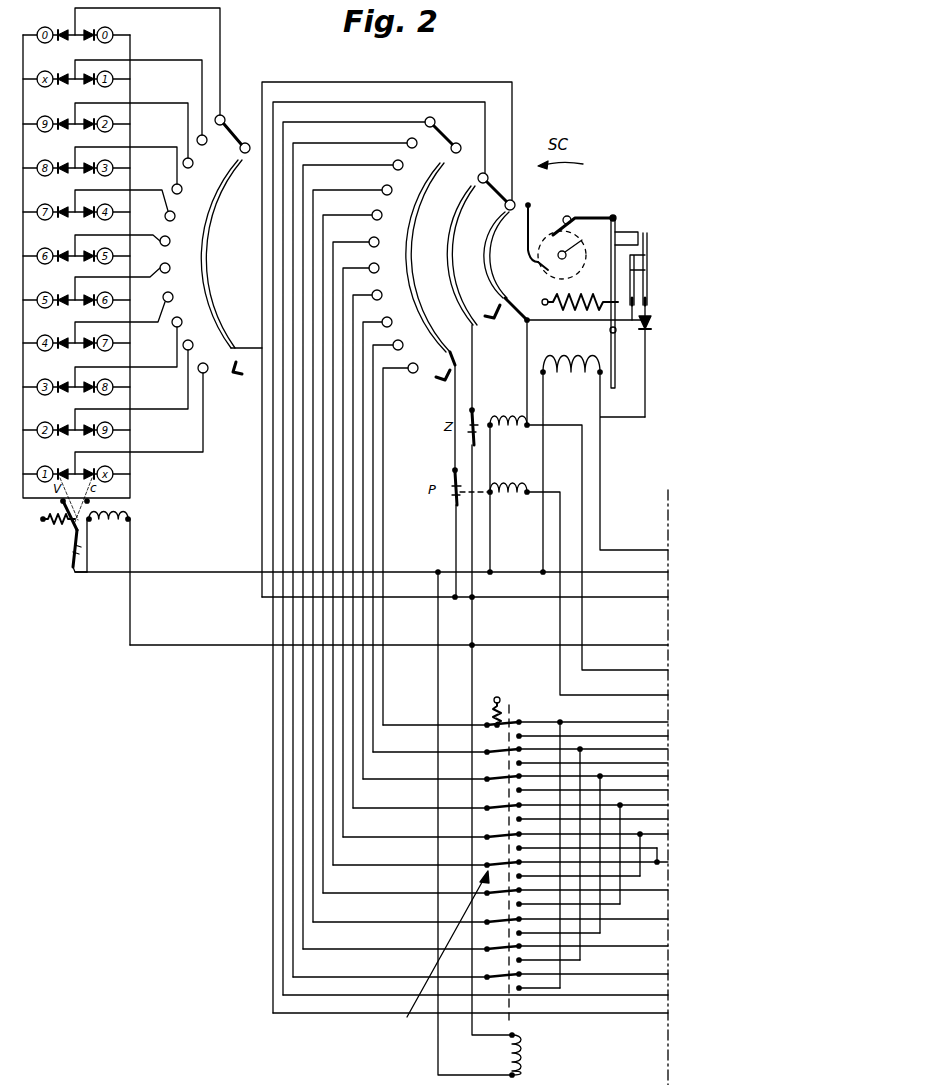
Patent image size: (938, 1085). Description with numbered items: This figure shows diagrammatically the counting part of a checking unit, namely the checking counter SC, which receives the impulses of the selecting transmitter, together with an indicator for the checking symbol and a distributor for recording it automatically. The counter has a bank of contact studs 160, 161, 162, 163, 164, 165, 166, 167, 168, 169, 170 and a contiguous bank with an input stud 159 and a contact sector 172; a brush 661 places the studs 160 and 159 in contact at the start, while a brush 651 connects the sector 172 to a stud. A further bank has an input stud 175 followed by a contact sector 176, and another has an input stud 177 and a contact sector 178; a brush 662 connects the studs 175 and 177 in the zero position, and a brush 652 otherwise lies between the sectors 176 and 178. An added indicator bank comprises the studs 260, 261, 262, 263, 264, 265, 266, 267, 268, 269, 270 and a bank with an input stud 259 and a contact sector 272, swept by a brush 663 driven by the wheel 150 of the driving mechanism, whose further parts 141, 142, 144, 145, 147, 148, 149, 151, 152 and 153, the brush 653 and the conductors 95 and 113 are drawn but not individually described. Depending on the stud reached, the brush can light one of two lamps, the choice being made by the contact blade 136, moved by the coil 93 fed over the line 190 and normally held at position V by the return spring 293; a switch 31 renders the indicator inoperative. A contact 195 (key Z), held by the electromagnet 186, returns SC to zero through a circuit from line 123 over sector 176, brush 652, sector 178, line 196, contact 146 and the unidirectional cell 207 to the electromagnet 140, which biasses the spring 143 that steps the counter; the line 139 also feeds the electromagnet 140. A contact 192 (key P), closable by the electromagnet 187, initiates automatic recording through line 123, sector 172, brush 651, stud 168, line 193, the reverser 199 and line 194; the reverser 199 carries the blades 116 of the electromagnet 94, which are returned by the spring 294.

The contact stud 260 is at (165, 66).
The contact stud 261 is at (154, 110).
The contact stud 262 is at (148, 140).
The contact stud 263 is at (143, 173).
The contact stud 264 is at (139, 208).
The contact stud 265 is at (137, 245).
The contact stud 266 is at (137, 281).
The contact stud 267 is at (138, 316).
The contact stud 268 is at (143, 351).
The input stud 269 is at (149, 385).
The contact stud 270 is at (156, 418).
The terminal 259 is at (251, 160).
The brush 663 is at (241, 134).
The contact sector 272 is at (211, 265).
The wiper contact 653 is at (229, 381).
The contact blade 136 is at (67, 513).
The return spring 293 is at (54, 530).
The switch 31 is at (70, 552).
The relay coil 93 is at (108, 579).
The conductor 95 is at (371, 562).
The feeding line 190 is at (399, 635).
The line 123 is at (398, 600).
The cable conductors 113 is at (271, 828).
The line 193 is at (383, 790).
The contact stud 160 is at (445, 116).
The contact stud 161 is at (425, 149).
The contact stud 162 is at (412, 170).
The contact stud 163 is at (402, 194).
The contact stud 164 is at (392, 220).
The contact stud 165 is at (389, 245).
The contact stud 166 is at (389, 270).
The contact stud 167 is at (392, 297).
The contact stud 168 is at (402, 323).
The contact stud 169 is at (413, 347).
The contact stud 170 is at (427, 368).
The input stud 159 is at (465, 161).
The brush 661 is at (456, 134).
The input stud 175 is at (498, 171).
The input stud 177 is at (528, 197).
The brush 662 is at (491, 198).
The contact sector 172 is at (424, 258).
The brush 651 is at (439, 411).
The contact sector 176 is at (468, 258).
The contact sector 178 is at (502, 258).
The brush 652 is at (506, 322).
The pawl 152 is at (528, 228).
The ratchet wheel 153 is at (575, 251).
The wheel 150 is at (540, 272).
The pivot 151 is at (555, 214).
The armature arm 149 is at (588, 217).
The pivot 148 is at (618, 215).
The armature bar 141 is at (617, 382).
The armature 144 is at (638, 232).
The contact spring 145 is at (648, 250).
The contact 146 is at (642, 278).
The resistor 142 is at (612, 288).
The spring 143 is at (570, 320).
The contact 147 is at (609, 332).
The line 196 is at (631, 325).
The unidirectional cell 207 is at (650, 325).
The electromagnet 140 is at (604, 464).
The line 139 is at (630, 553).
The contact 195 is at (480, 417).
The contact 192 is at (452, 500).
The electromagnet 186 is at (578, 495).
The electromagnet 187 is at (578, 589).
The return spring 294 is at (502, 704).
The contact blades 116 is at (492, 795).
The line 194 is at (612, 790).
The reverser 199 is at (437, 955).
The electromagnet 94 is at (526, 1050).